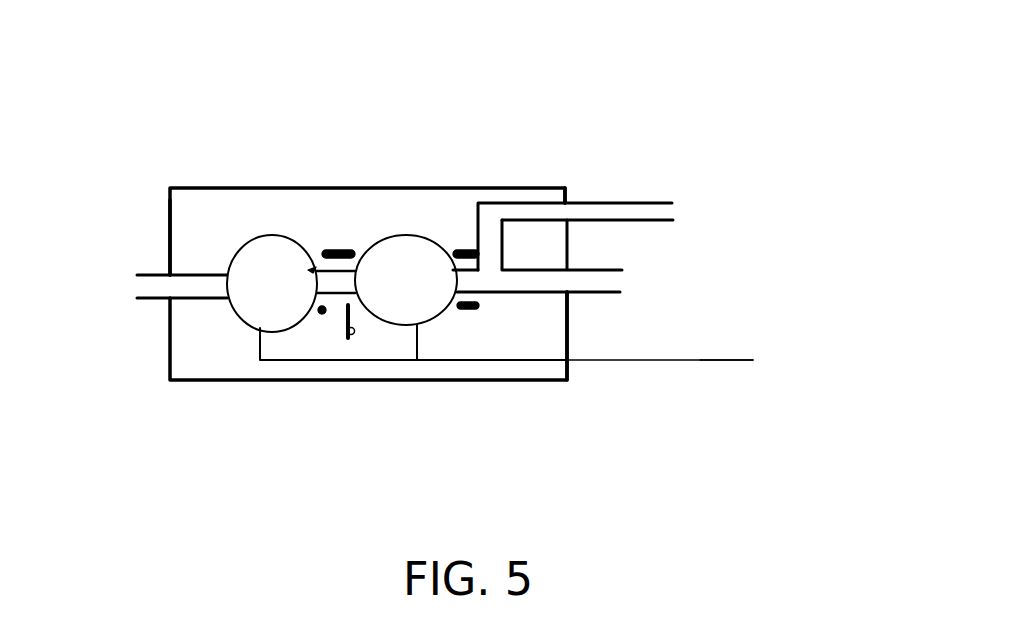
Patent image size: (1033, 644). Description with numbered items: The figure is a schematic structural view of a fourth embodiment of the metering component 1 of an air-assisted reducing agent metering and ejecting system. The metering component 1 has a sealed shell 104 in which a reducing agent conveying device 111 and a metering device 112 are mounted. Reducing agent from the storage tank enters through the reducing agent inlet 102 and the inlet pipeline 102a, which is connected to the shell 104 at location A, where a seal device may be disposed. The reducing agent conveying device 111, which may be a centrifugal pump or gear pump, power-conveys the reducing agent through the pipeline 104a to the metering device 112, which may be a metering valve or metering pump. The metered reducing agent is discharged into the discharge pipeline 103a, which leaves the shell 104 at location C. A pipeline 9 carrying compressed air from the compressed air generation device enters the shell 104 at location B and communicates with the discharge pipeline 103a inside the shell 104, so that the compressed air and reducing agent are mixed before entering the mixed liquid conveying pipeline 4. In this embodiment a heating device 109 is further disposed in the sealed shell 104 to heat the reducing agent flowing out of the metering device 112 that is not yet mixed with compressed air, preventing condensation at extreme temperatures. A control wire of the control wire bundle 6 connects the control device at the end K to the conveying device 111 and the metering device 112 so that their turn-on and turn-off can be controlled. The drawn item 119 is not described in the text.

The sealed shell 104 is at (263, 188).
The location where the inlet pipeline and the shell are connected A is at (168, 270).
The reducing agent inlet 102 is at (139, 283).
The inlet pipeline 102a is at (208, 287).
The reducing agent conveying device 111 is at (260, 265).
The pipeline 104a is at (340, 283).
The metering device 112 is at (415, 307).
The heating device 109 is at (467, 250).
The valve 119 is at (357, 312).
The metering component 1 is at (347, 368).
The location where the pipeline 9 and the shell are connected B is at (565, 193).
The pipeline 9 is at (665, 203).
The location where the discharge pipeline and the shell are connected C is at (568, 268).
The mixed liquid conveying pipeline 4 is at (618, 282).
The discharge pipeline 103a is at (548, 283).
The control wire bundle 6 is at (712, 360).
The end K is at (739, 361).